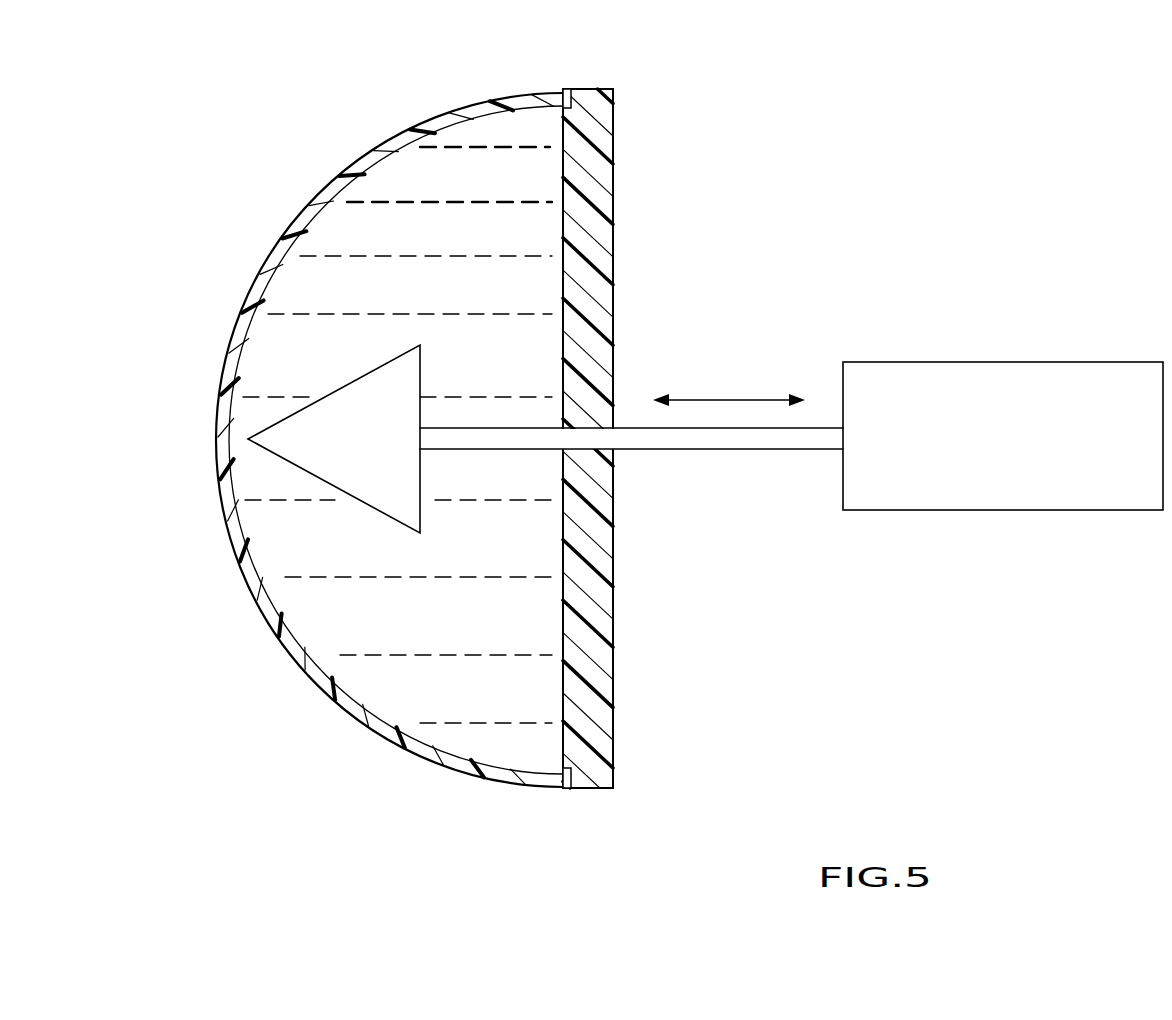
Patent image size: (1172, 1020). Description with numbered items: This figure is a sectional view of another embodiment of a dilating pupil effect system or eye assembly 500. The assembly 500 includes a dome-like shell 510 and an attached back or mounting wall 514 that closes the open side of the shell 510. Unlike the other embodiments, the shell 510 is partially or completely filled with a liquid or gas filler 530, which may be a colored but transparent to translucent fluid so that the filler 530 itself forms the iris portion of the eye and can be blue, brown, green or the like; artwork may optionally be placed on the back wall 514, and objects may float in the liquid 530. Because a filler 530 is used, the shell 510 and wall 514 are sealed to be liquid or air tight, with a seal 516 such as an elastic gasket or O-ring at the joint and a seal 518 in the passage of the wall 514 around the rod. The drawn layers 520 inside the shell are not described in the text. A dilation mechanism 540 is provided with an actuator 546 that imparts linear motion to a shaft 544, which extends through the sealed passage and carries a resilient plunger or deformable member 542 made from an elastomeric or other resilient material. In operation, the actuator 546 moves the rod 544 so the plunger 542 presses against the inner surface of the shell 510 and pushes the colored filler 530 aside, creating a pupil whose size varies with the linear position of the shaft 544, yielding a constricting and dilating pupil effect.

The eye assembly 500 is at (230, 172).
The shell 510 is at (395, 135).
The mounting wall 514 is at (613, 117).
The seal 516 is at (566, 92).
The seal 518 is at (613, 452).
The dome interior reflective layers 520 is at (460, 745).
The filler 530 is at (543, 202).
The dilation mechanism 540 is at (884, 545).
The deformable member 542 is at (325, 395).
The shaft 544 is at (478, 428).
The actuator 546 is at (1005, 362).